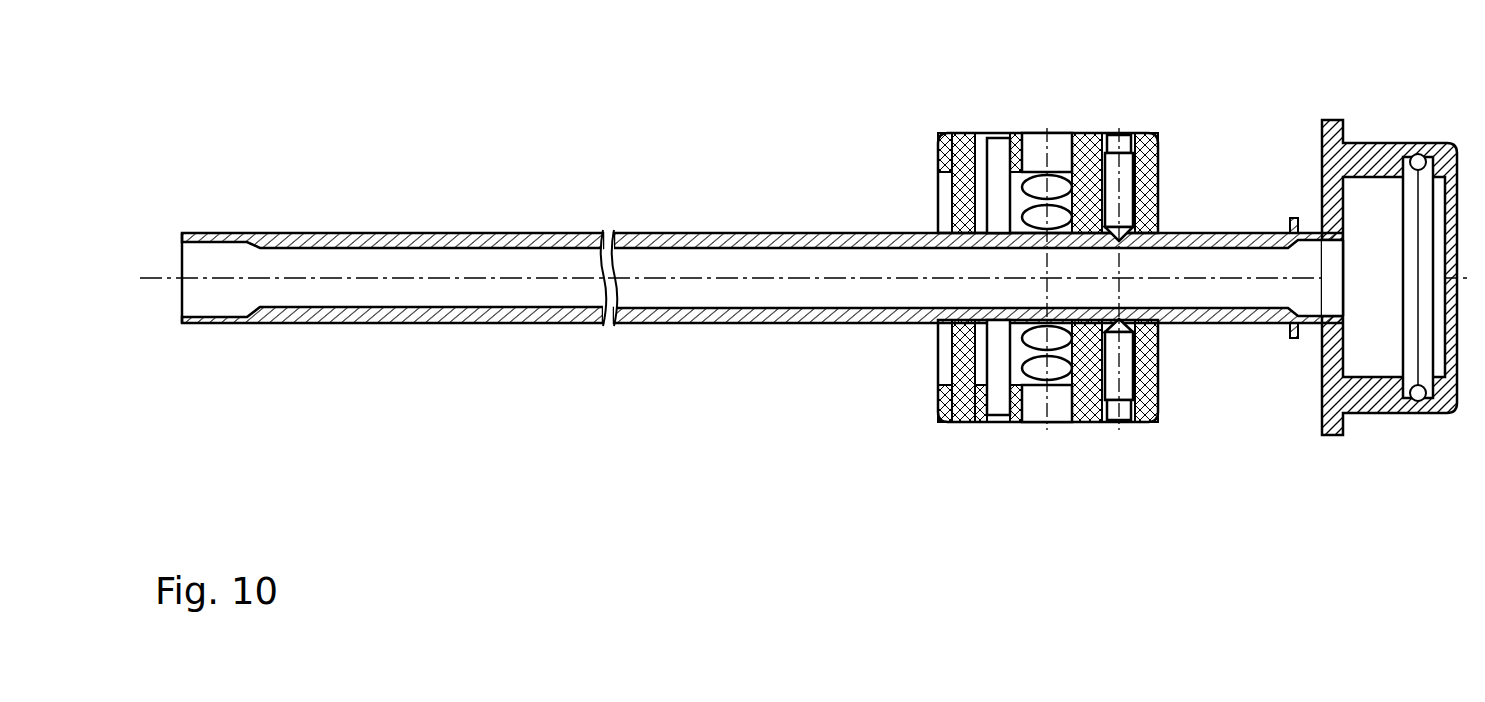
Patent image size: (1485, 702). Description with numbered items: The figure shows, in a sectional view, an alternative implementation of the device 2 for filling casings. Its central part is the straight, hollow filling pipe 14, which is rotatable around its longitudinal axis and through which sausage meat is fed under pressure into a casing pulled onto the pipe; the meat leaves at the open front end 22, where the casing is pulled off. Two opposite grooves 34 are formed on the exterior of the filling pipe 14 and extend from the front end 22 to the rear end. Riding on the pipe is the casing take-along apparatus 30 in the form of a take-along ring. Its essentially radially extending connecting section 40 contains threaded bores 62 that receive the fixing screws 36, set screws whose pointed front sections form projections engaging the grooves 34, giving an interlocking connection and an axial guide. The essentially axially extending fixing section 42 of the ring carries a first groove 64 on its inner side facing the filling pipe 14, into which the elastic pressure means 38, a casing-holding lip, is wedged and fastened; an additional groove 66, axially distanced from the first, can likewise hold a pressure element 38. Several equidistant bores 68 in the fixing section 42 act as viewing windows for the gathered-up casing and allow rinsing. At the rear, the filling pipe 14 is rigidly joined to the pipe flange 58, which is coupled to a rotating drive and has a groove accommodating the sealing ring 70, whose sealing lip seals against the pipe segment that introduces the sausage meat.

The device for filling casings 2 is at (638, 347).
The filling pipe 14 is at (368, 327).
The front end 22 is at (212, 327).
The casing take-along apparatus 30 is at (923, 430).
The grooves 34 is at (455, 327).
The fixing screws 36 is at (1126, 150).
The pressure means 38 is at (963, 195).
The connecting section 40 is at (1166, 373).
The fixing section 42 is at (1000, 130).
The pipe flange 58 is at (1383, 120).
The threaded bores 62 is at (1161, 182).
The first groove 64 is at (960, 147).
The additional groove 66 is at (998, 405).
The bores 68 is at (1053, 190).
The sealing ring 70 is at (1418, 402).